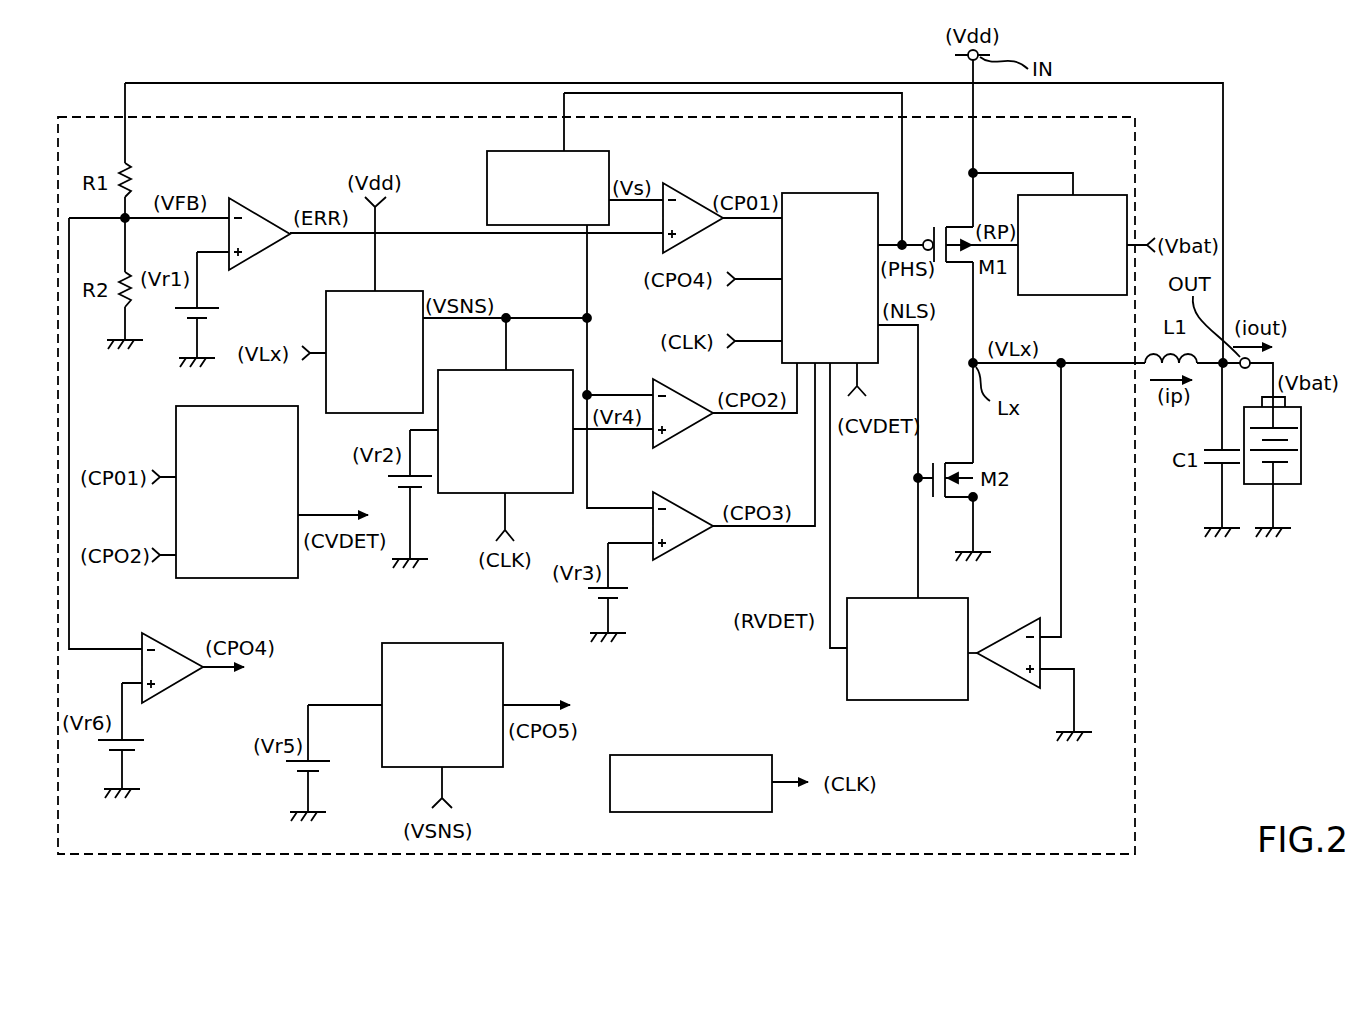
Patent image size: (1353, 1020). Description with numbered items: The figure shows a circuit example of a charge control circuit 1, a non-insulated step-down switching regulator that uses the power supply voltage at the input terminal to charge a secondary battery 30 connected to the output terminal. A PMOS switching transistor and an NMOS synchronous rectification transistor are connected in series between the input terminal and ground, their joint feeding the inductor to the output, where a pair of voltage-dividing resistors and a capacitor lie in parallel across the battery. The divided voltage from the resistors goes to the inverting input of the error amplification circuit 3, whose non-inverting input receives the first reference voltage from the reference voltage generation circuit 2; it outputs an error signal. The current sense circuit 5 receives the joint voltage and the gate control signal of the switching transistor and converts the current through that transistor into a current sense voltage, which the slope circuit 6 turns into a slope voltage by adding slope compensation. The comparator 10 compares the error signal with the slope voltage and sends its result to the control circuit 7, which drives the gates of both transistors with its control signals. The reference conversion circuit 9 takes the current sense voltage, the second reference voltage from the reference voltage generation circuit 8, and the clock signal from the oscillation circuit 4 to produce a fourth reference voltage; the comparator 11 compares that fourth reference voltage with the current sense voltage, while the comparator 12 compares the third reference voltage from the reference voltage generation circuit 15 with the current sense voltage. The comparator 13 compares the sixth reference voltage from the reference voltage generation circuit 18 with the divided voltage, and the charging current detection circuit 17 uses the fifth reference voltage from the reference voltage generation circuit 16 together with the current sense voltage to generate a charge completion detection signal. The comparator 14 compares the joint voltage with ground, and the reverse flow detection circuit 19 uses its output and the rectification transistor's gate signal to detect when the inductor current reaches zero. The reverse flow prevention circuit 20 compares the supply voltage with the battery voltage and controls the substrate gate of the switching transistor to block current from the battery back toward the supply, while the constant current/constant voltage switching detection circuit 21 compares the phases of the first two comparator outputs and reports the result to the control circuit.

The charge control circuit 1 is at (1147, 50).
The reference voltage generation circuit 2 is at (208, 311).
The error amplification circuit 3 is at (250, 210).
The oscillation circuit 4 is at (739, 755).
The current sense circuit 5 is at (395, 291).
The slope circuit 6 is at (528, 151).
The control circuit 7 is at (850, 193).
The reference voltage generation circuit 8 is at (422, 478).
The reference conversion circuit 9 is at (488, 370).
The comparator 10 is at (690, 199).
The comparator 11 is at (690, 427).
The comparator 12 is at (690, 540).
The comparator 13 is at (170, 649).
The comparator 14 is at (1016, 676).
The reference voltage generation circuit 15 is at (618, 590).
The reference voltage generation circuit 16 is at (318, 774).
The charging current detection circuit 17 is at (505, 650).
The reference voltage generation circuit 18 is at (133, 744).
The reverse flow detection circuit 19 is at (890, 700).
The reverse flow prevention circuit 20 is at (1107, 195).
The constant current/constant voltage switching detection circuit 21 is at (176, 422).
The secondary battery 30 is at (1301, 470).